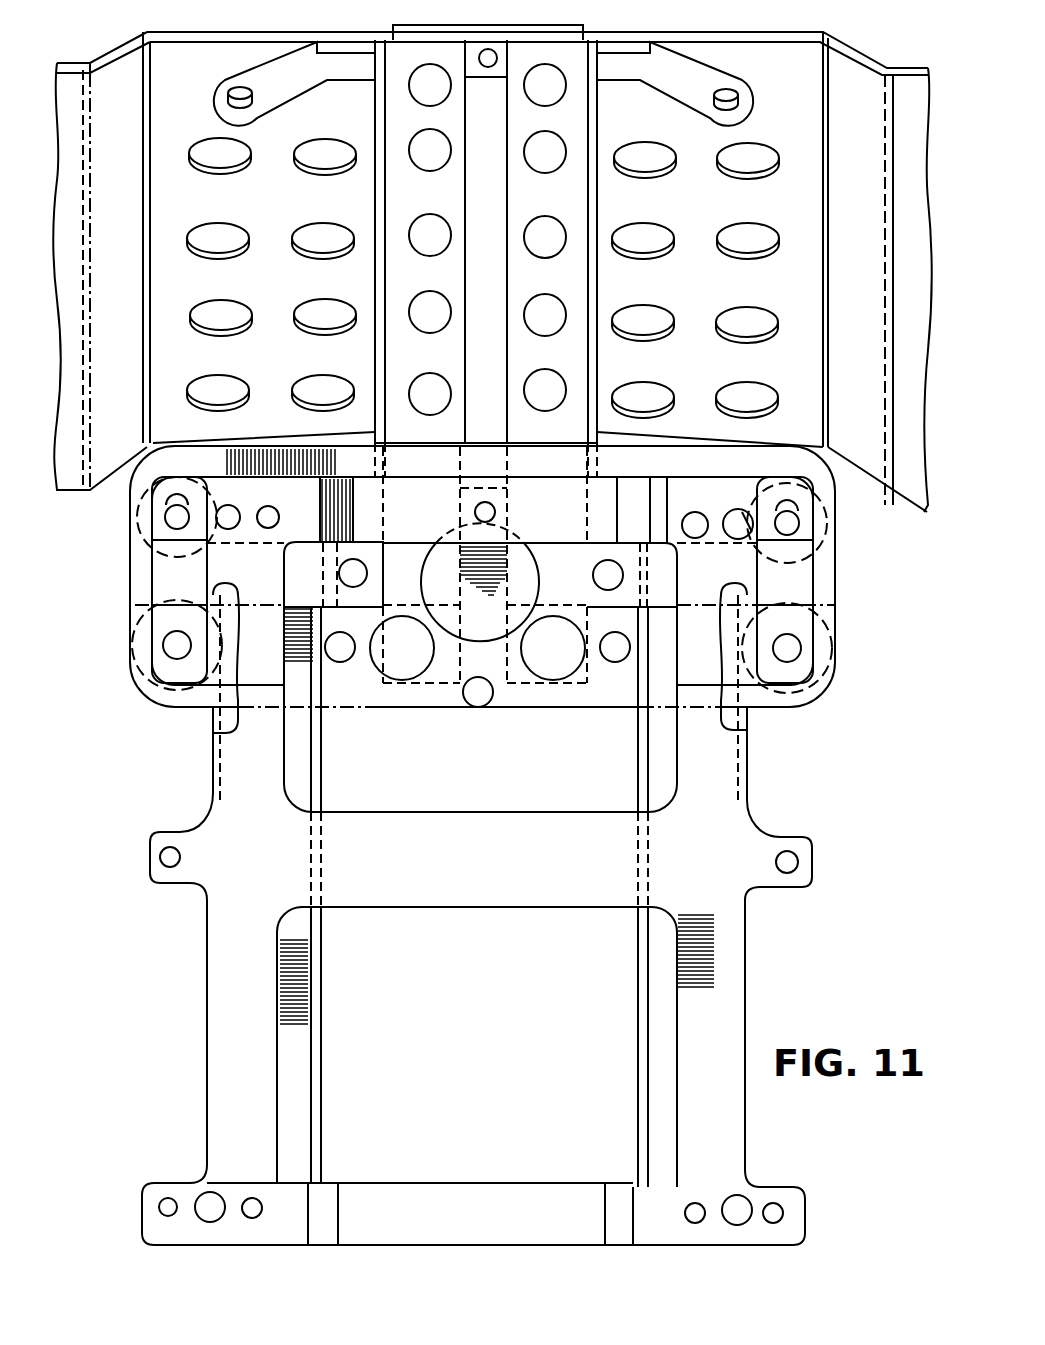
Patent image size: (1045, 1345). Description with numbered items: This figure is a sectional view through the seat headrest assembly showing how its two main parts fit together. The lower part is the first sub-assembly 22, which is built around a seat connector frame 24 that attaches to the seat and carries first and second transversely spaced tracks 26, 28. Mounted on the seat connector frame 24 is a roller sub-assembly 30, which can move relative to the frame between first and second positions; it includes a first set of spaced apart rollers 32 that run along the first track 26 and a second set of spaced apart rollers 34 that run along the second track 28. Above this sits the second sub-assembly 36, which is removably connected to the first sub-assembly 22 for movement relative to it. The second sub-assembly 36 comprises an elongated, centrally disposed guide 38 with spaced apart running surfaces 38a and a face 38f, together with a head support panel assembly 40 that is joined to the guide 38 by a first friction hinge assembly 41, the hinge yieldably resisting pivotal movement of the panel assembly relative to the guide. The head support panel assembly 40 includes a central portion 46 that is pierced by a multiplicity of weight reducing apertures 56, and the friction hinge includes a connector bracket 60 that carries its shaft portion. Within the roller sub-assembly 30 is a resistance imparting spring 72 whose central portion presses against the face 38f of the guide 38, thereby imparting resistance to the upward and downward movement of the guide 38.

The first sub-assembly 22 is at (772, 803).
The seat connector frame 24 is at (205, 1007).
The first track 26 is at (742, 697).
The second track 28 is at (216, 717).
The roller sub-assembly 30 is at (165, 706).
The first set of spaced apart rollers 32 is at (827, 643).
The second set of spaced apart rollers 34 is at (140, 647).
The second sub-assembly 36 is at (898, 502).
The guide 38 is at (570, 278).
The running surfaces 38a is at (598, 196).
The face of guide 38f is at (481, 196).
The head support panel assembly 40 is at (170, 62).
The first friction hinge assembly 41 is at (552, 27).
The central portion 46 is at (884, 198).
The weight reducing apertures 56 is at (314, 163).
The connector bracket 60 is at (290, 80).
The spring 72 is at (488, 594).